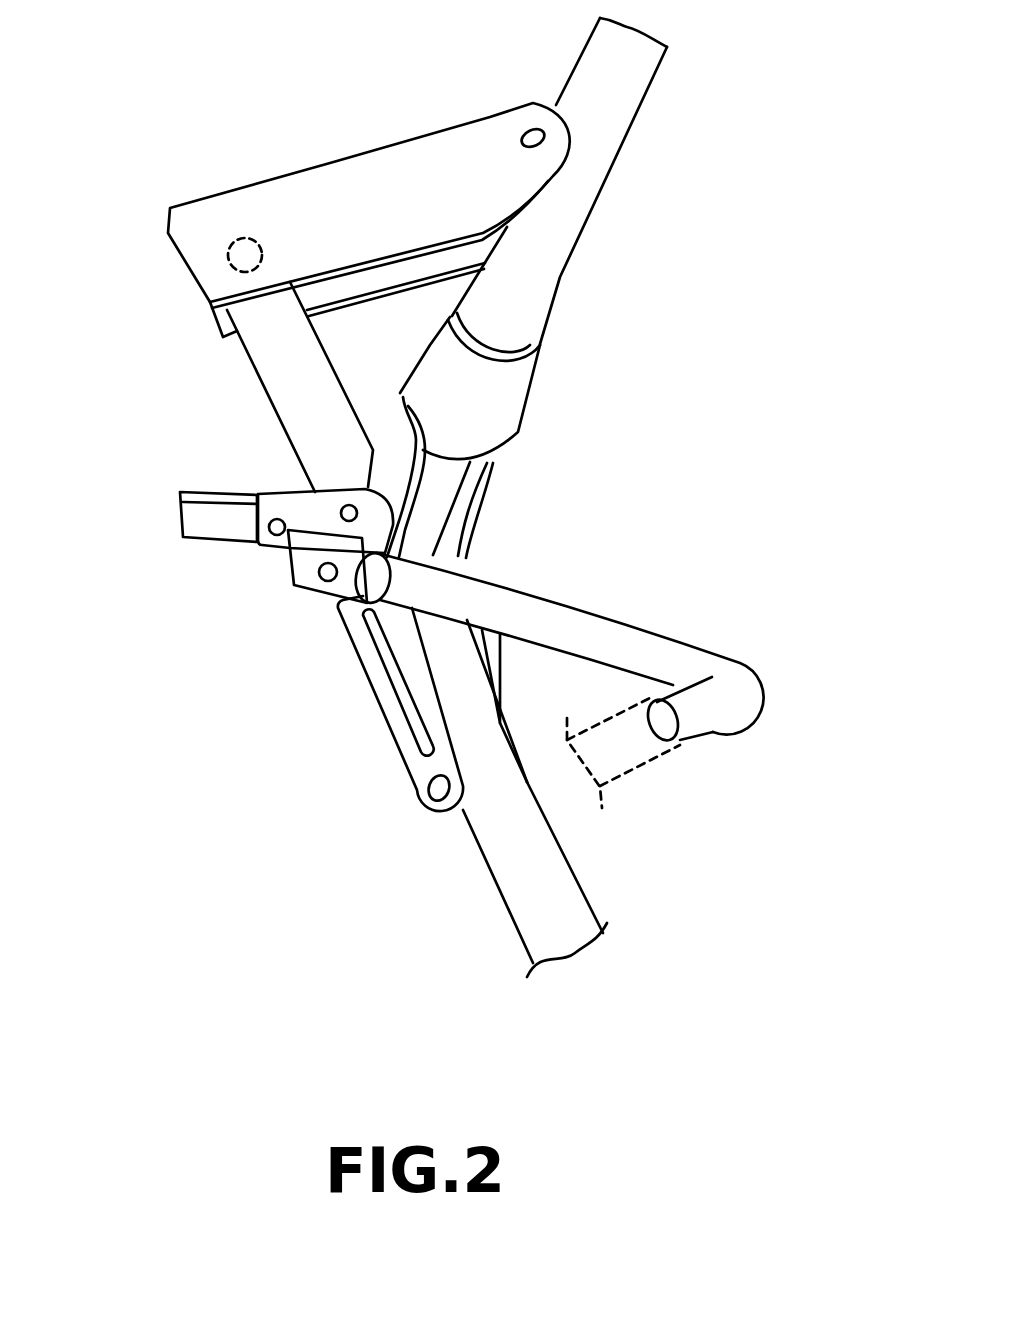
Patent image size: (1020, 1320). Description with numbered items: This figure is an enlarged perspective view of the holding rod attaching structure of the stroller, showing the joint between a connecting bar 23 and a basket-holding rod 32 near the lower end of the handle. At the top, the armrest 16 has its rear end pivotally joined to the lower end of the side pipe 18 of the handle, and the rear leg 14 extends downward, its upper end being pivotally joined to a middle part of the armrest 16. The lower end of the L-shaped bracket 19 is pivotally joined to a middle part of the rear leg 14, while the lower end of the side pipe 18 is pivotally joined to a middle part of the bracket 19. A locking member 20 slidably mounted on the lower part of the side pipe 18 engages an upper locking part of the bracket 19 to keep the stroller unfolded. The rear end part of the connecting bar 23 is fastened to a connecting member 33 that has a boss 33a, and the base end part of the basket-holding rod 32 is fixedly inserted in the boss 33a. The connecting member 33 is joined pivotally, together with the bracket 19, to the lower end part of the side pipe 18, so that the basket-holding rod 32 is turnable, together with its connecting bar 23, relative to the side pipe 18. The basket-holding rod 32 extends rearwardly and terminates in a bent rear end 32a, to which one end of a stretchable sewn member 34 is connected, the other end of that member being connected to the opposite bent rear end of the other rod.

The rear leg 14 is at (497, 861).
The armrest 16 is at (332, 188).
The side pipe 18 is at (550, 255).
The bracket 19 is at (453, 559).
The locking member 20 is at (497, 418).
The connecting bar 23 is at (215, 525).
The basket-holding rod 32 is at (617, 632).
The bent rear end 32a is at (707, 712).
The connecting member 33 is at (273, 550).
The boss 33a is at (317, 580).
The stretchable sewn member 34 is at (630, 757).